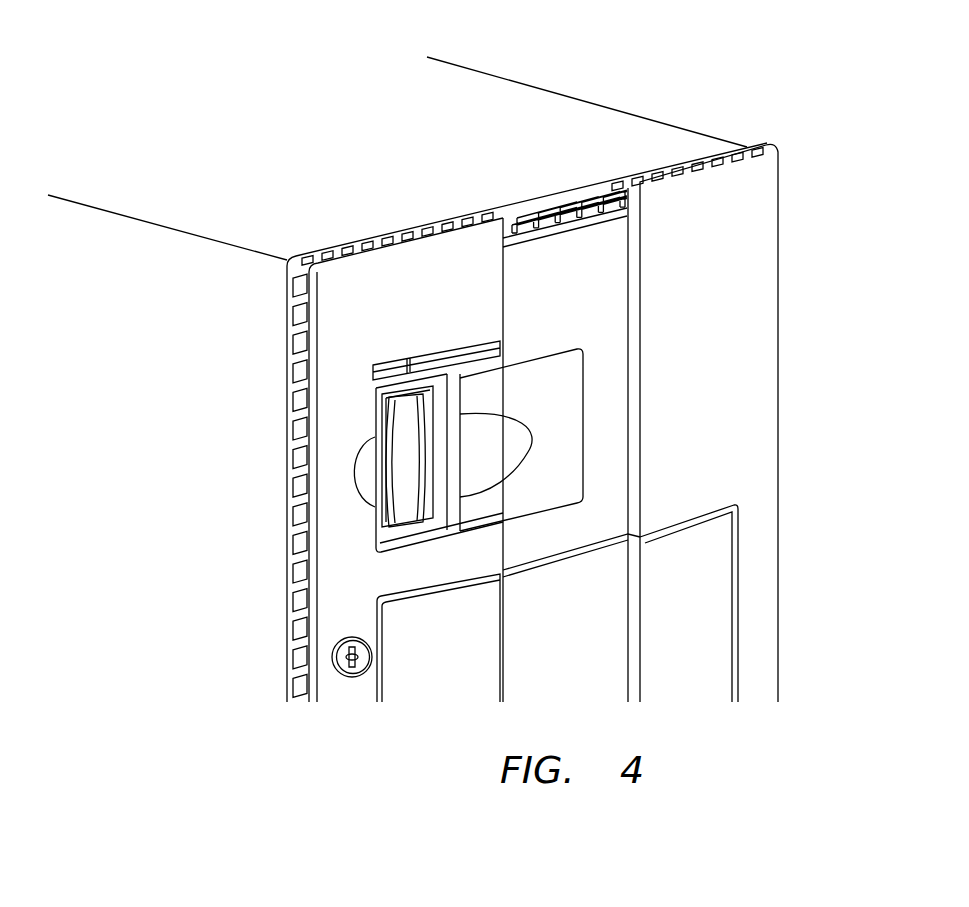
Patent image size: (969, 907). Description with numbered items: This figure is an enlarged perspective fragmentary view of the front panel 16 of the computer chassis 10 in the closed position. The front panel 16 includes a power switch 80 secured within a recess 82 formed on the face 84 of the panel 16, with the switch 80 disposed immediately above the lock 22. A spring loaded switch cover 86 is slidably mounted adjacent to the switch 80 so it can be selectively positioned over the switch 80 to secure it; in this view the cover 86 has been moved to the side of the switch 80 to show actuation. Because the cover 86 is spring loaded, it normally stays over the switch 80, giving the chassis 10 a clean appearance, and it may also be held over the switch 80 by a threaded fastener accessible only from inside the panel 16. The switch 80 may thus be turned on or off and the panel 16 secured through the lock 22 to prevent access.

The chassis 10 is at (636, 97).
The front panel 16 is at (770, 193).
The lock 22 is at (344, 670).
The power switch 80 is at (401, 390).
The recess 82 is at (382, 405).
The face 84 is at (335, 541).
The switch cover 86 is at (566, 383).